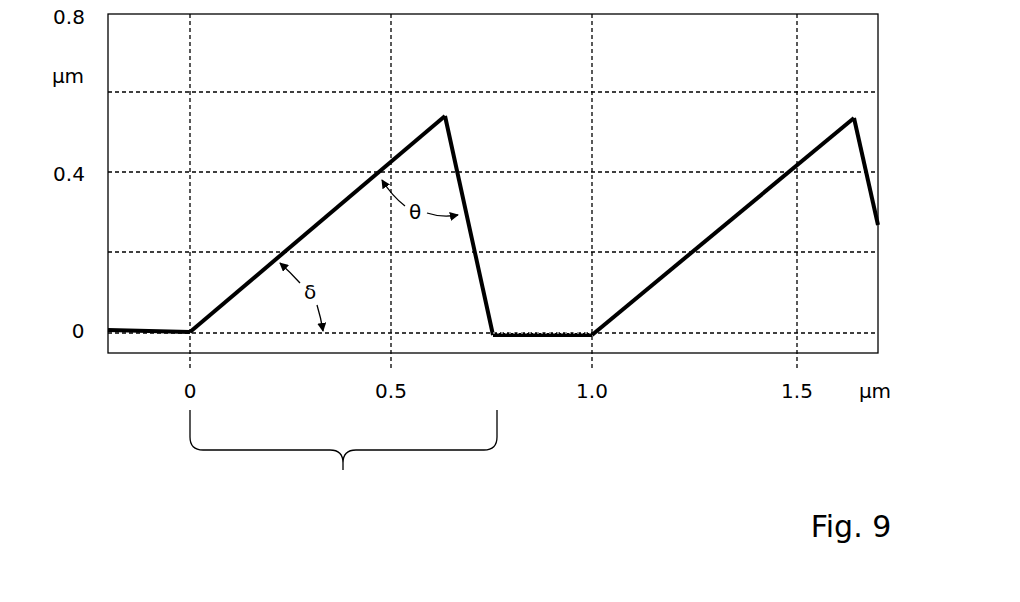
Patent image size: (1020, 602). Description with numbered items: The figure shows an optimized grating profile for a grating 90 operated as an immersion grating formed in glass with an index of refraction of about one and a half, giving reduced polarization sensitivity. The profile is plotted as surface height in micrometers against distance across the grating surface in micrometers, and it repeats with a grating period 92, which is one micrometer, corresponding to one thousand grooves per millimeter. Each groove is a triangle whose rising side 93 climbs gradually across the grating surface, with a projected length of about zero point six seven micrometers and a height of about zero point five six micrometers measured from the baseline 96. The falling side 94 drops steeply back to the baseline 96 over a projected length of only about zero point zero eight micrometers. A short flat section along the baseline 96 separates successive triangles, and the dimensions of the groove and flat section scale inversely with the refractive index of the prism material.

The optimized grating 90 is at (585, 122).
The grating period 92 is at (343, 456).
The rising side of triangle 93 is at (338, 215).
The falling side of triangle 94 is at (470, 225).
The baseline 96 is at (526, 333).